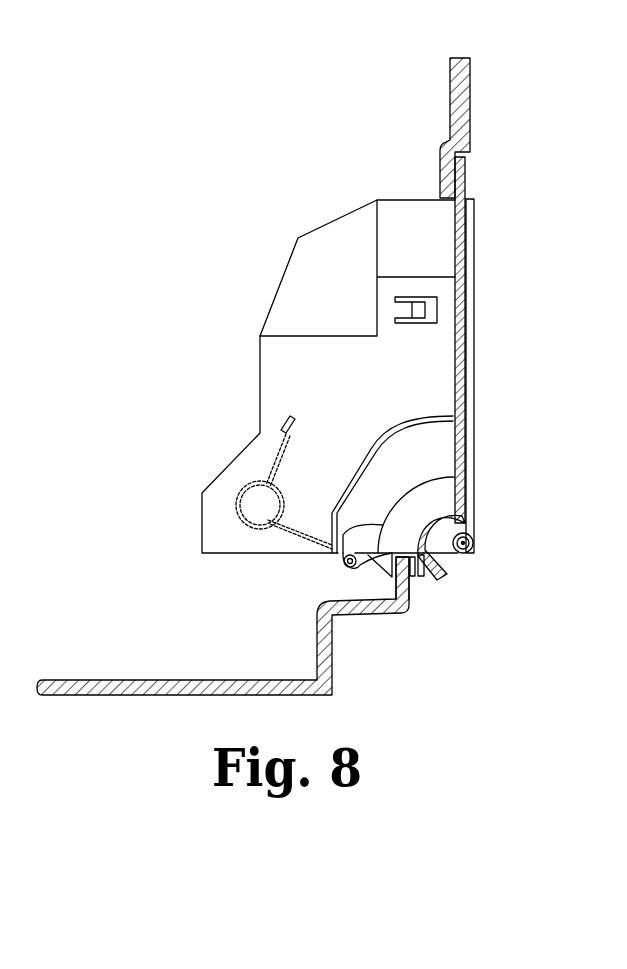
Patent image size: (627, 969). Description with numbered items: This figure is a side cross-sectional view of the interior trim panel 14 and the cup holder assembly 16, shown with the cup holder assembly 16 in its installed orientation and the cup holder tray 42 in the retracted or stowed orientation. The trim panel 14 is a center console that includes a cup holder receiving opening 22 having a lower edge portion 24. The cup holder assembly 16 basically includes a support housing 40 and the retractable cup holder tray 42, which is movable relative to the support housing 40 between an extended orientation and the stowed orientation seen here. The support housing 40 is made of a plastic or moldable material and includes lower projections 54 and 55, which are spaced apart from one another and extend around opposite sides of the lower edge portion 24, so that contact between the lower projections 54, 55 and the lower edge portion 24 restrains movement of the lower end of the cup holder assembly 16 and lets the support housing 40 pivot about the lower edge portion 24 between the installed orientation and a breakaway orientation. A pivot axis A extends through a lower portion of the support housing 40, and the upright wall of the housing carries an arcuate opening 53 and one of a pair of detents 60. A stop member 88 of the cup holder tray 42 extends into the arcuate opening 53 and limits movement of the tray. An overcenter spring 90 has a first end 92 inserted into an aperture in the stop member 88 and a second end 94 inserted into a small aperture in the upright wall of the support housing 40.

The interior trim panel 14 is at (472, 98).
The cup holder assembly 16 is at (510, 105).
The cup holder receiving opening 22 is at (436, 198).
The lower edge portion 24 is at (412, 600).
The support housing 40 is at (380, 199).
The cup holder tray 42 is at (480, 236).
The arcuate opening 53 is at (383, 448).
The lower projection 54 is at (393, 572).
The lower projection 55 is at (415, 578).
The detent 60 is at (413, 308).
The stop member 88 is at (345, 552).
The overcenter spring 90 is at (247, 537).
The first end 92 is at (346, 566).
The second end 94 is at (287, 422).
The pivot axis A is at (474, 544).